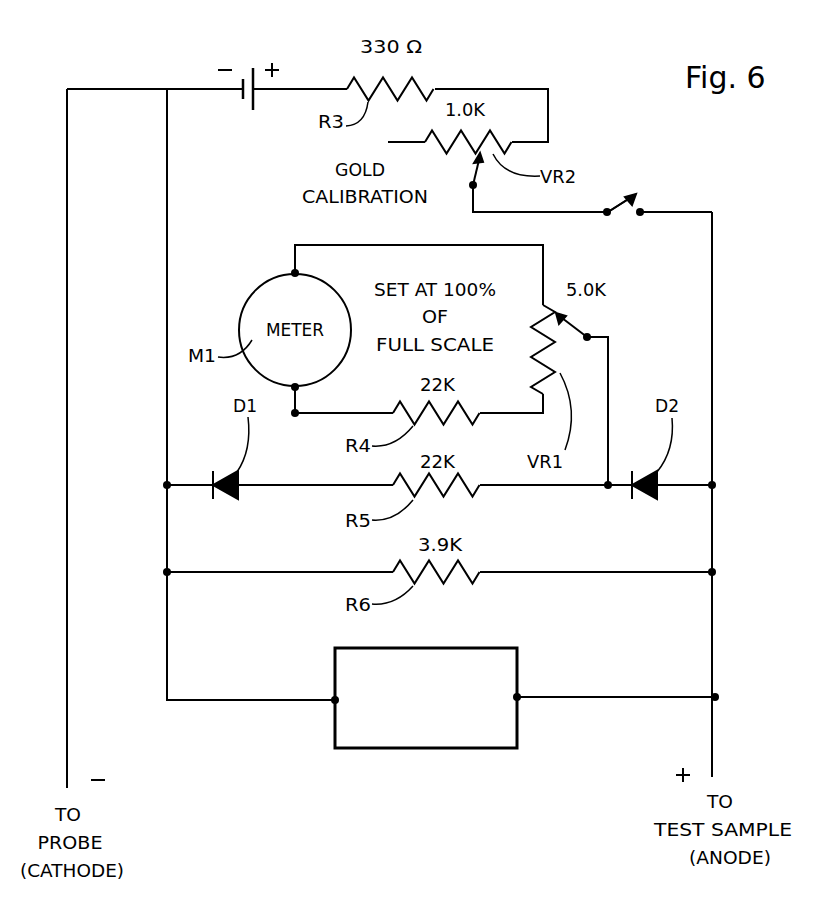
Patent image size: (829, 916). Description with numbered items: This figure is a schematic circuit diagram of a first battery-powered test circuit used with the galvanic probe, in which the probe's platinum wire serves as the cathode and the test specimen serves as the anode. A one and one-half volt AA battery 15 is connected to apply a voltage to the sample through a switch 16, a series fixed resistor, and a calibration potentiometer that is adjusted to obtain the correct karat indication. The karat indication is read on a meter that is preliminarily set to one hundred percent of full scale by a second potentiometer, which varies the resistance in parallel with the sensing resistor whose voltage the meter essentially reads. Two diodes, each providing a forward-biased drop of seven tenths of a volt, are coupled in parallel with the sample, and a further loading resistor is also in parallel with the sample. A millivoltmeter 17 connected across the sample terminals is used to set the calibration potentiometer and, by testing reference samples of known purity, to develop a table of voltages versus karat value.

The battery 15 is at (249, 76).
The switch 16 is at (618, 198).
The millivoltmeter 17 is at (503, 738).